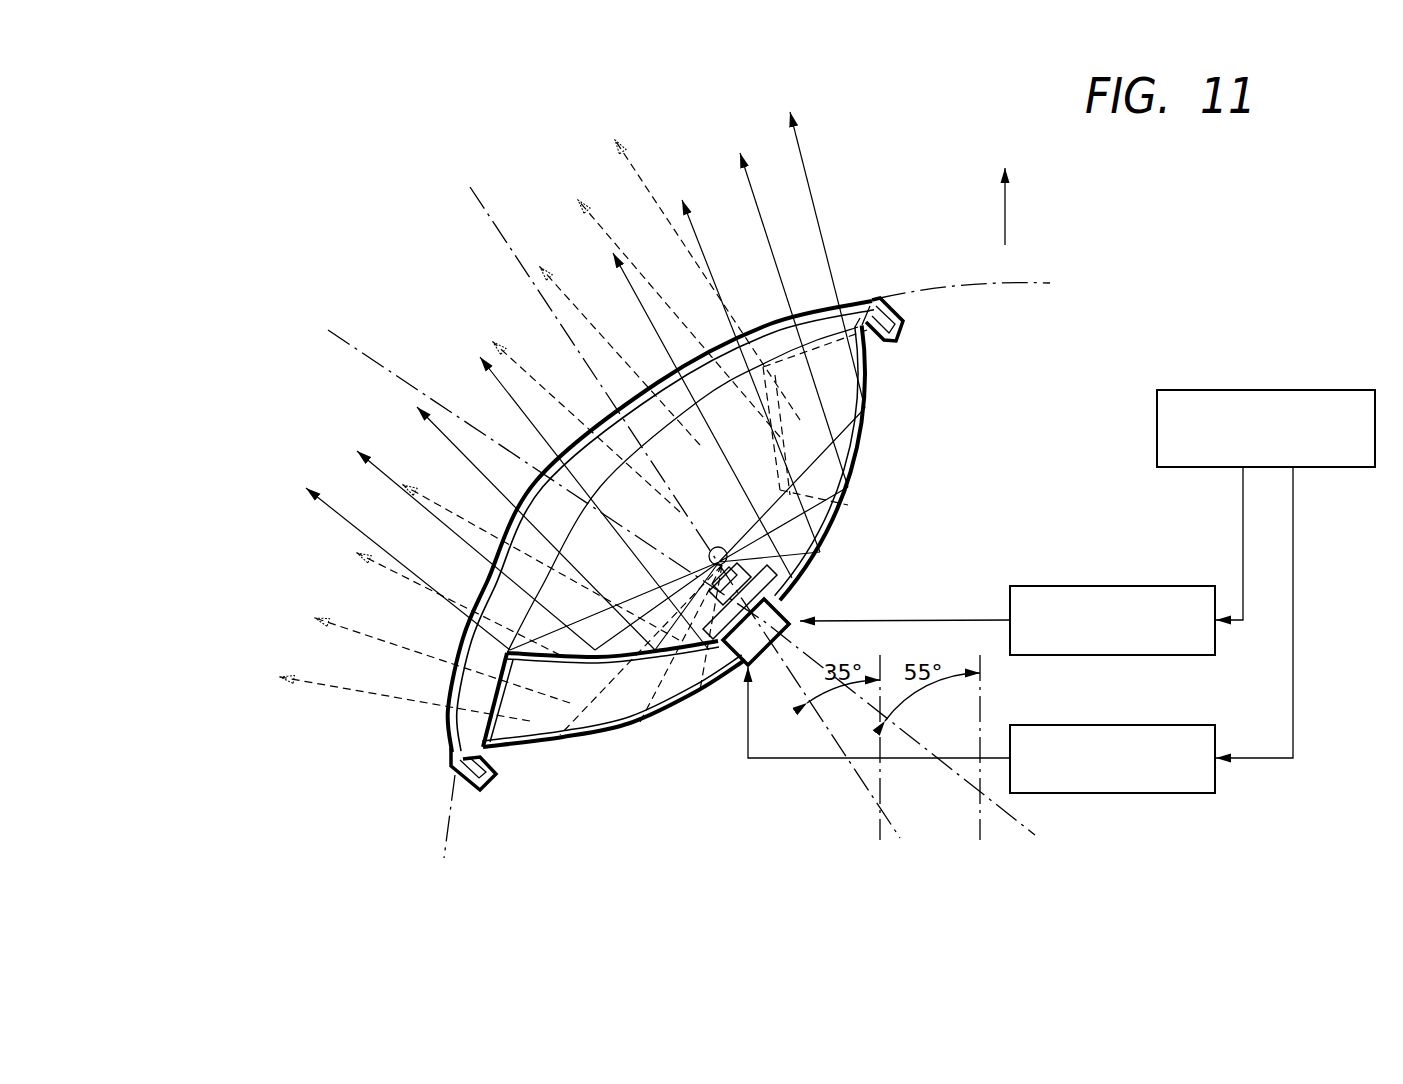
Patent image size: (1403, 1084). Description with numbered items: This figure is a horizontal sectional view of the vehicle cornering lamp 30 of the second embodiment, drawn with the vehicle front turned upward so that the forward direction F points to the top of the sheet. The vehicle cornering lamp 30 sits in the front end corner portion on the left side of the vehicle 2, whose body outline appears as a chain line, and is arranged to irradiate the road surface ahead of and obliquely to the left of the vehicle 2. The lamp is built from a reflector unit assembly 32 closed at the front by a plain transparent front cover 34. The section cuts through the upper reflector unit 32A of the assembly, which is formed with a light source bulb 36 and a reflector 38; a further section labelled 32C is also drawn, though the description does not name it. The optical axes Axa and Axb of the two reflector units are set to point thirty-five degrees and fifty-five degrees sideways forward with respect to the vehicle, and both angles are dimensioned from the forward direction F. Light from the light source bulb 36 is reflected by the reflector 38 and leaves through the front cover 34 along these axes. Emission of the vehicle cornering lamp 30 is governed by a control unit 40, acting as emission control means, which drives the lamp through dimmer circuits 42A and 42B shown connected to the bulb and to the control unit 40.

The vehicle 2 is at (932, 279).
The vehicle cornering lamp 30 is at (380, 262).
The reflector unit assembly 32 is at (764, 548).
The reflector unit 32A is at (838, 508).
The second reflector portion 32C is at (645, 722).
The plain transparent front cover 34 is at (448, 706).
The light source bulb 36 is at (714, 546).
The reflector 38 is at (868, 392).
The control unit 40 is at (1298, 388).
The dimmer circuit 42A is at (1152, 586).
The dimmer circuit 42B is at (1145, 725).
The optical axis Axa is at (479, 196).
The optical axis Axb is at (336, 336).
The forward direction F is at (1005, 191).